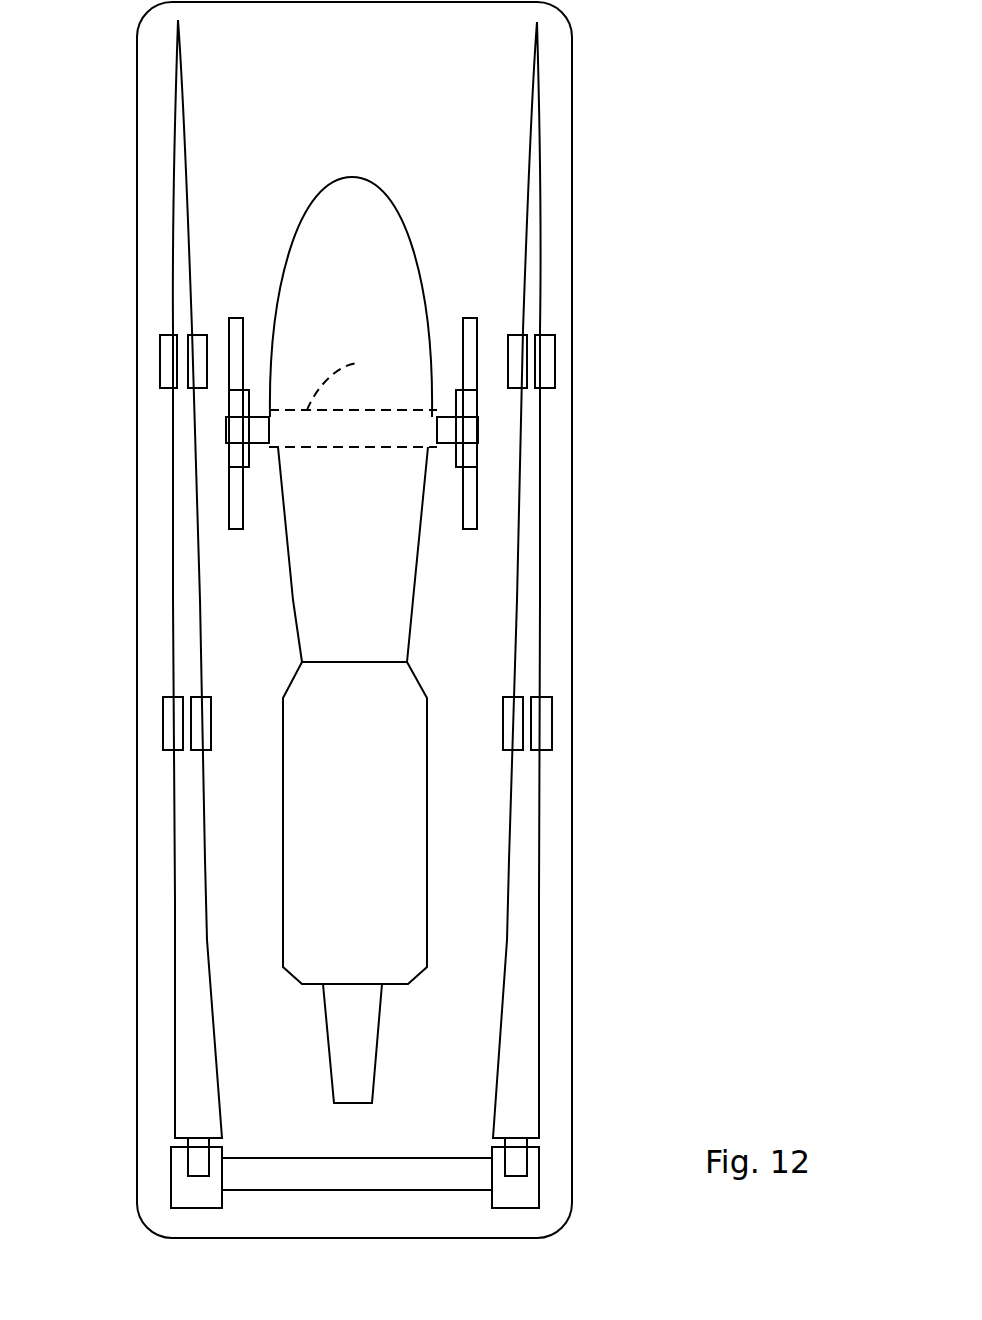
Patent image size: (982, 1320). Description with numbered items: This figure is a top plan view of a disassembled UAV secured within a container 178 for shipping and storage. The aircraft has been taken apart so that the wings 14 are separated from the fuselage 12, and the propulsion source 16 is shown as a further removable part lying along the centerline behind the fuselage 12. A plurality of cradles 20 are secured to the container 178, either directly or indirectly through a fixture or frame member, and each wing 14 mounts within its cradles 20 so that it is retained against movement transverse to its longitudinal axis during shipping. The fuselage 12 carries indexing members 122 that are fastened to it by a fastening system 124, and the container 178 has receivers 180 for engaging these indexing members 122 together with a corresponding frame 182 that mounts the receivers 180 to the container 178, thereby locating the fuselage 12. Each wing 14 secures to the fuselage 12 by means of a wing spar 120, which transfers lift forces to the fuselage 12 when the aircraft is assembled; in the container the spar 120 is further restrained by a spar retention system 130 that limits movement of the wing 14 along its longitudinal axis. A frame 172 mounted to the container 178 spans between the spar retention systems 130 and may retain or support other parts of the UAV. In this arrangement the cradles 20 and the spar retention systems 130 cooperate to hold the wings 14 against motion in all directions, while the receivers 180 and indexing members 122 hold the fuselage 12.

The fuselage 12 is at (345, 568).
The wing 14 is at (213, 1037).
The propulsion source 16 is at (352, 808).
The cradle 20 is at (199, 363).
The wing spar 120 is at (197, 1163).
The indexing member 122 is at (257, 433).
The fastening system 124 is at (355, 380).
The spar retention system 130 is at (188, 1195).
The frame 172 is at (337, 1185).
The container 178 is at (571, 233).
The receiver 180 is at (262, 400).
The frame 182 is at (250, 500).